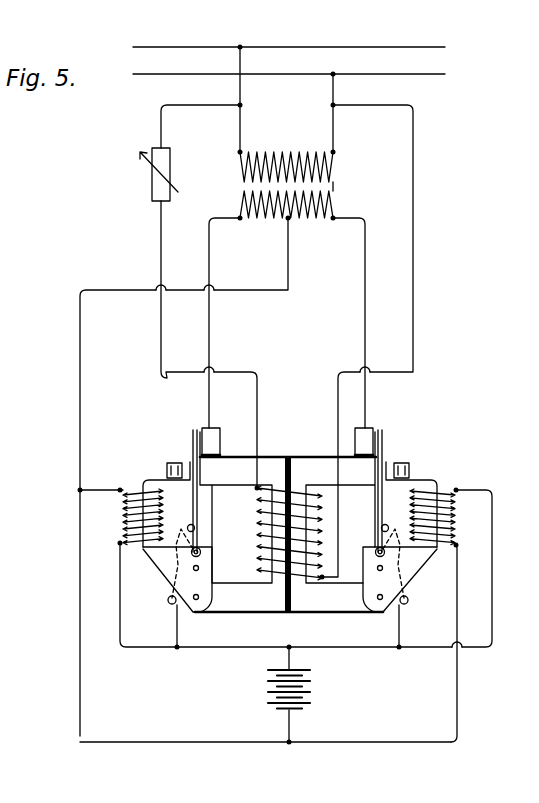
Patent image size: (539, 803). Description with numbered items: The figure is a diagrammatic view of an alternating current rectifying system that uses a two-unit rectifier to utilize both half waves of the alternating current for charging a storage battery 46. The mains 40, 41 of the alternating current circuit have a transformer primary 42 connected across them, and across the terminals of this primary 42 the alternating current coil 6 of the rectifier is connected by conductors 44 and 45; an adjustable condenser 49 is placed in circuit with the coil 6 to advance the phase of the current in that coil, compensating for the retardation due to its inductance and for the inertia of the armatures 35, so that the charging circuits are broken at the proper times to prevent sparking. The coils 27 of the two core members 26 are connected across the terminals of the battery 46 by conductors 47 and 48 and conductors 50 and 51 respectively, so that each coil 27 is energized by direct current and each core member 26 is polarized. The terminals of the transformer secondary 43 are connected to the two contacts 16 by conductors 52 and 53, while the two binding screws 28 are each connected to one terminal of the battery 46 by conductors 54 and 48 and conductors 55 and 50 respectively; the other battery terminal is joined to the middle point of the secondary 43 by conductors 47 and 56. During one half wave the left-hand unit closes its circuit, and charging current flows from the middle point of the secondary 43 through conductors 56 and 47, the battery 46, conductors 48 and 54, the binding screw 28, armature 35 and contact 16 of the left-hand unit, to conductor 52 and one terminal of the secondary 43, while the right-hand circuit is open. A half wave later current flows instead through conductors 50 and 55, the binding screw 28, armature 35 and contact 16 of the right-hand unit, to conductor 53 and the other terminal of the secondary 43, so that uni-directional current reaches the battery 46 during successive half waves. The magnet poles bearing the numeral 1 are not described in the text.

The alternating current main 40 is at (281, 50).
The alternating current main 41 is at (378, 73).
The transformer primary 42 is at (277, 145).
The transformer secondary 43 is at (257, 218).
The conductor 44 is at (153, 237).
The conductor 45 is at (421, 225).
The storage battery 46 is at (298, 693).
The conductor 47 is at (117, 482).
The conductor 48 is at (224, 648).
The adjustable condenser 49 is at (149, 178).
The conductor 50 is at (499, 559).
The conductor 51 is at (457, 711).
The conductor 52 is at (217, 319).
The conductor 53 is at (365, 325).
The conductor 54 is at (176, 624).
The conductor 55 is at (407, 624).
The conductor 56 is at (80, 385).
The contact 16 is at (212, 432).
The core member 26 is at (146, 471).
The coil 27 is at (128, 500).
The binding screw 28 is at (168, 598).
The armature 35 is at (203, 500).
The coil 6 is at (262, 524).
The magnet core 1 is at (289, 522).